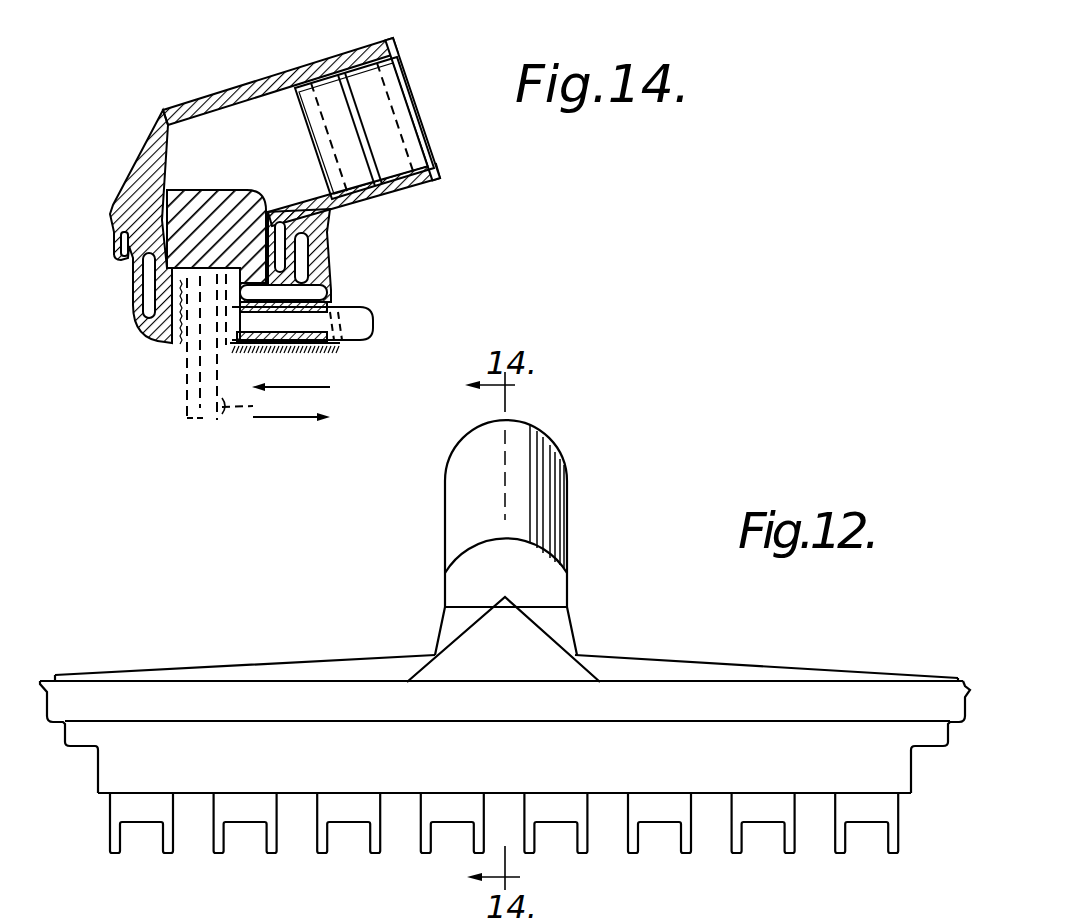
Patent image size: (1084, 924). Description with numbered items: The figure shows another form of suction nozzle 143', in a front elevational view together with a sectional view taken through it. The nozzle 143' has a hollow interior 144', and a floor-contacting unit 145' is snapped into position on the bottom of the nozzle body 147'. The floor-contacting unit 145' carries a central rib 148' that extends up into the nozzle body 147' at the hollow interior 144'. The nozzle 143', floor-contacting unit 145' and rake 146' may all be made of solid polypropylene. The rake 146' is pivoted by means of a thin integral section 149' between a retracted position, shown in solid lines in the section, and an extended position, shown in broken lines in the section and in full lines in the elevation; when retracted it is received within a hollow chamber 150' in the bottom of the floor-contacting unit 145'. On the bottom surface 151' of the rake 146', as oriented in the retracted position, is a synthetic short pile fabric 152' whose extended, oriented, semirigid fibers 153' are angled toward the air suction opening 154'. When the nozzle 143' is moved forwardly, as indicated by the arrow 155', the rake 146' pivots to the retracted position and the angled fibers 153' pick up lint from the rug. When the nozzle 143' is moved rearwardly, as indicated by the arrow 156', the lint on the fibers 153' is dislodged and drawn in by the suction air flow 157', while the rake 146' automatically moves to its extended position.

In FIG. 14, the nozzle 143' is at (301, 120).
In FIG. 12, the nozzle 143' is at (505, 636).
In FIG. 14, the hollow interior 144' is at (338, 128).
In FIG. 14, the floor-contacting unit 145' is at (122, 360).
In FIG. 14, the rake 146' is at (280, 366).
In FIG. 14, the nozzle body 147' is at (164, 196).
In FIG. 14, the central rib 148' is at (217, 218).
In FIG. 14, the thin integral section 149' is at (283, 298).
In FIG. 14, the hollow chamber 150' is at (315, 255).
In FIG. 14, the bottom surface 151' is at (289, 362).
In FIG. 14, the synthetic fabric 152' is at (366, 362).
In FIG. 14, the fibers 153' is at (255, 362).
In FIG. 14, the air suction opening 154' is at (185, 344).
In FIG. 14, the arrow 155' is at (323, 399).
In FIG. 14, the arrow 156' is at (291, 438).
In FIG. 14, the suction air flow 157' is at (249, 431).